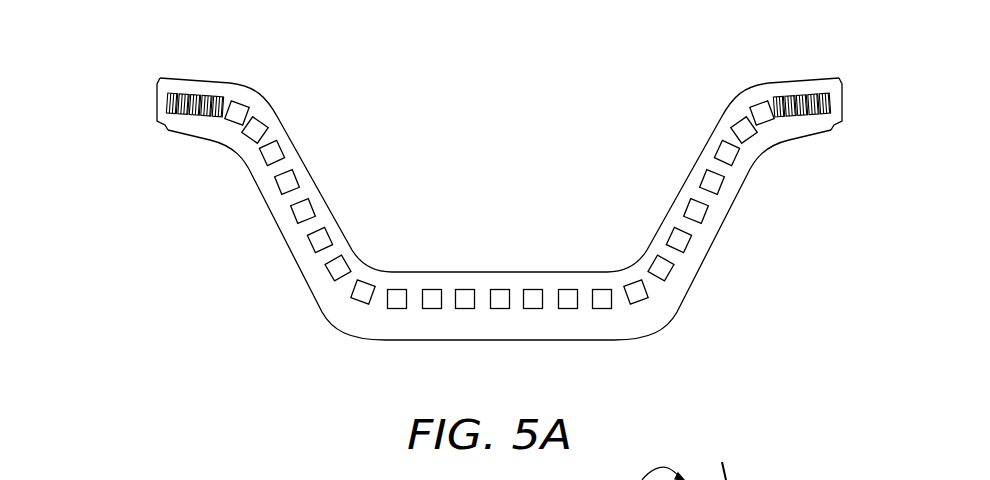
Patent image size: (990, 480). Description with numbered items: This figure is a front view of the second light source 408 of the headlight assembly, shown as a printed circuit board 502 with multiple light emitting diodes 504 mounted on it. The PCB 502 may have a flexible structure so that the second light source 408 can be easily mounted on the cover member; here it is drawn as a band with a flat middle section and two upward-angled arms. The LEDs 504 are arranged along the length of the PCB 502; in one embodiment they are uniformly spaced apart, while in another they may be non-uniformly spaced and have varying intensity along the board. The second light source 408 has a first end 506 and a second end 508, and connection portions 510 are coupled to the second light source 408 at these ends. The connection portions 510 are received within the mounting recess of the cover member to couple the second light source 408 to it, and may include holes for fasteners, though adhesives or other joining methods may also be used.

The second light source 408 is at (814, 56).
The printed circuit board 502 is at (657, 301).
The light emitting diodes 504 is at (497, 289).
The first end 506 is at (141, 128).
The second end 508 is at (864, 83).
The connection portions 510 is at (161, 78).